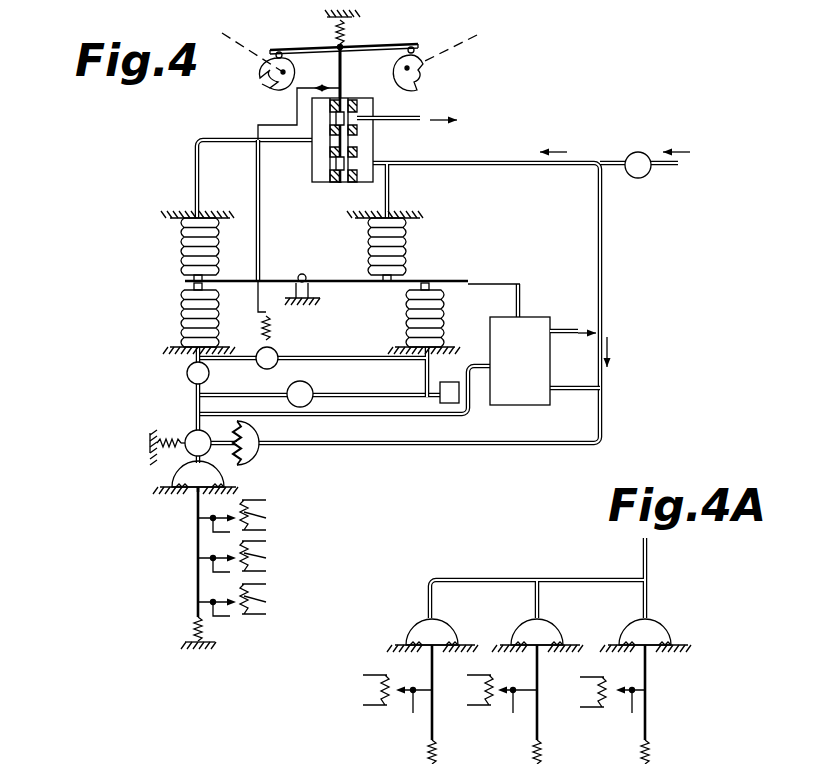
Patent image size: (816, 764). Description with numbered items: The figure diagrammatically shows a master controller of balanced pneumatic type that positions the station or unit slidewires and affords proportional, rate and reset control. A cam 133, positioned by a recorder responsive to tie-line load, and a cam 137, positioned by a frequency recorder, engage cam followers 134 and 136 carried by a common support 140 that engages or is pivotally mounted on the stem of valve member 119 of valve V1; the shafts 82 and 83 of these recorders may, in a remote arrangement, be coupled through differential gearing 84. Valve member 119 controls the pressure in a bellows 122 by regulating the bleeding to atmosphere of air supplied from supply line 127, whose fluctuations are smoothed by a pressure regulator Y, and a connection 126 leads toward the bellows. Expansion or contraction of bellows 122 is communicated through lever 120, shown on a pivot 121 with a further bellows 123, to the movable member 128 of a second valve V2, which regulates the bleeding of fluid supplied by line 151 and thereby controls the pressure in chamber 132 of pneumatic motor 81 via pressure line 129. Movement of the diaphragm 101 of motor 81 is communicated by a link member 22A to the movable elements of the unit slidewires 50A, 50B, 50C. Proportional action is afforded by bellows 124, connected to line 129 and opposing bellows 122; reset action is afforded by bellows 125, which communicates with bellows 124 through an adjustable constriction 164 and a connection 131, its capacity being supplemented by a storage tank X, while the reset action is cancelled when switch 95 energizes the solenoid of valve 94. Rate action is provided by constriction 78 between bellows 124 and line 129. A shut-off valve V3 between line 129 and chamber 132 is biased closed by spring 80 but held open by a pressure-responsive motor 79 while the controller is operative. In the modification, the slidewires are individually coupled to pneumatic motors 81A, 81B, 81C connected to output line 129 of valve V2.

In FIG. 4, the common support 140 is at (363, 43).
In FIG. 4, the shaft 82 is at (246, 55).
In FIG. 4, the cam follower 136 is at (283, 57).
In FIG. 4, the cam follower 134 is at (416, 50).
In FIG. 4, the shaft 83 is at (461, 50).
In FIG. 4, the valve member 119 is at (343, 78).
In FIG. 4, the cam 133 is at (421, 78).
In FIG. 4, the cam 137 is at (252, 98).
In FIG. 4, the switch 95 is at (297, 100).
In FIG. 4, the valve V1 is at (367, 137).
In FIG. 4, the conduit 126 is at (197, 182).
In FIG. 4, the bellows 122 is at (182, 243).
In FIG. 4, the lever 120 is at (273, 278).
In FIG. 4, the pivot 121 is at (306, 274).
In FIG. 4, the bellows 123 is at (410, 252).
In FIG. 4, the supply line 127 is at (502, 168).
In FIG. 4, the pressure regulator Y is at (646, 177).
In FIG. 4, the bellows 124 is at (190, 306).
In FIG. 4, the bellows 125 is at (410, 304).
In FIG. 4, the movable member 128 is at (525, 303).
In FIG. 4, the solenoid-actuated valve 94 is at (280, 347).
In FIG. 4, the second valve V2 is at (497, 343).
In FIG. 4, the valve or constriction 78 is at (188, 374).
In FIG. 4, the valve or constriction 164 is at (312, 384).
In FIG. 4, the conduit 131 is at (362, 392).
In FIG. 4, the storage tank X is at (447, 382).
In FIG. 4, the pressure line 129 is at (470, 408).
In FIG. 4A, the pressure line 129 is at (648, 558).
In FIG. 4, the supply line 151 is at (573, 392).
In FIG. 4, the spring 80 is at (162, 435).
In FIG. 4, the shut-off valve V3 is at (190, 434).
In FIG. 4, the chamber 132 is at (182, 476).
In FIG. 4, the motor 79 is at (255, 457).
In FIG. 4, the pneumatic motor 81 is at (246, 464).
In FIG. 4, the diaphragm 101 is at (190, 490).
In FIG. 4, the link member 22A is at (197, 537).
In FIG. 4, the unit slidewire 50A is at (285, 516).
In FIG. 4A, the unit slidewire 50A is at (387, 694).
In FIG. 4, the unit slidewire 50B is at (284, 556).
In FIG. 4A, the unit slidewire 50B is at (490, 705).
In FIG. 4, the unit slidewire 50C is at (282, 600).
In FIG. 4A, the unit slidewire 50C is at (605, 707).
In FIG. 4A, the pneumatic motor 81A is at (447, 620).
In FIG. 4A, the pneumatic motor 81B is at (558, 620).
In FIG. 4A, the pneumatic motor 81C is at (658, 620).
In FIG. 4A, the differential gearing 84 is at (745, 758).